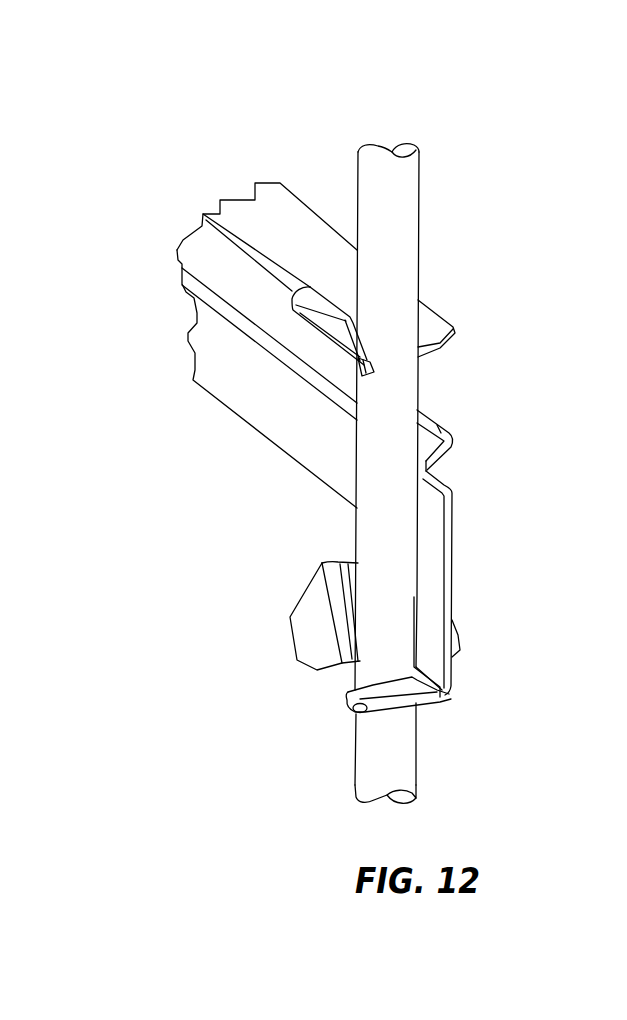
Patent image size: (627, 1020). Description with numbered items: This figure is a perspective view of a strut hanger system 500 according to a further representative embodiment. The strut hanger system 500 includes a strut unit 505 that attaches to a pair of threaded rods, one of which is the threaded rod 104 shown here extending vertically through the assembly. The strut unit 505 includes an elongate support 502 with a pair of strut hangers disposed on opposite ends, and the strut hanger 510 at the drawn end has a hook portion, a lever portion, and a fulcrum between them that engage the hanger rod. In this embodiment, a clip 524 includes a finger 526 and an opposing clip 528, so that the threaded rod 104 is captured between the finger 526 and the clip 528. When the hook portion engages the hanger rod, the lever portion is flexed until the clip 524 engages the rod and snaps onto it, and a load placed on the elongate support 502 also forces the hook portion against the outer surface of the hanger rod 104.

The strut hanger system 500 is at (492, 104).
The threaded rod 104 is at (400, 260).
The strut unit 505 is at (191, 176).
The elongate support 502 is at (285, 183).
The strut hanger 510 is at (516, 430).
The clip 524 is at (312, 722).
The finger 526 is at (402, 689).
The clip 528 is at (302, 560).